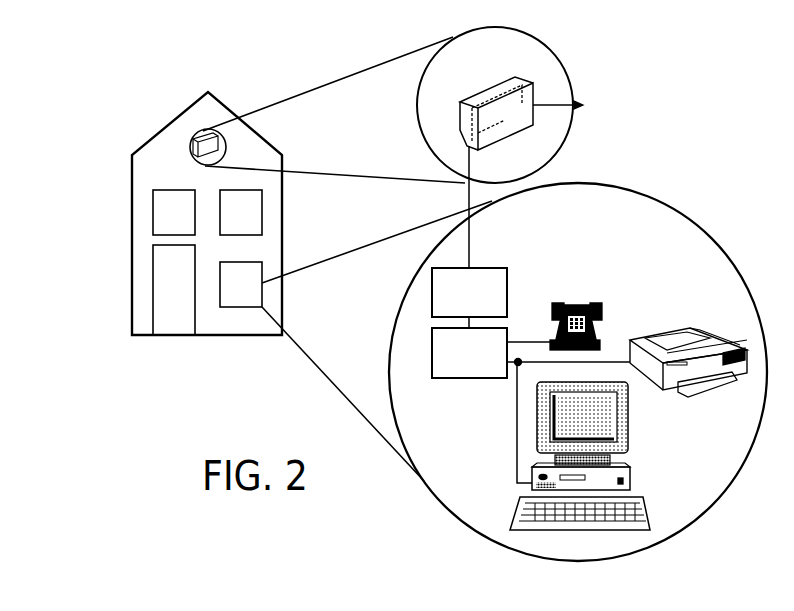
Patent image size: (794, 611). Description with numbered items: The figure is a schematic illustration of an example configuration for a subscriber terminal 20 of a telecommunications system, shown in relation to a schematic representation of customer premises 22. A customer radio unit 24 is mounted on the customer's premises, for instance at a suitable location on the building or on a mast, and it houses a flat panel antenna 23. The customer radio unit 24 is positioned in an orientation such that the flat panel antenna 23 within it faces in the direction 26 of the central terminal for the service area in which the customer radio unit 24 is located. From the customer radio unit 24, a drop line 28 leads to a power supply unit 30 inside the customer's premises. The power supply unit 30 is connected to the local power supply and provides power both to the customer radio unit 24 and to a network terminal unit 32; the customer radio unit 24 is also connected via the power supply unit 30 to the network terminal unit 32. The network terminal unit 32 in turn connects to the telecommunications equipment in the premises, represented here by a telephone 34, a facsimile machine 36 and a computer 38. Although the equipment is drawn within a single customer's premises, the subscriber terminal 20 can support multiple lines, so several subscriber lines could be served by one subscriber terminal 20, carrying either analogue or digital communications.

The subscriber terminal 20 is at (597, 172).
The customer premises 22 is at (131, 170).
The flat panel antenna 23 is at (509, 136).
The customer radio unit 24 is at (520, 83).
The direction 26 is at (553, 106).
The drop line 28 is at (468, 198).
The power supply unit 30 is at (507, 275).
The network terminal unit 32 is at (463, 378).
The telephone 34 is at (582, 302).
The facsimile machine 36 is at (677, 398).
The computer 38 is at (631, 486).